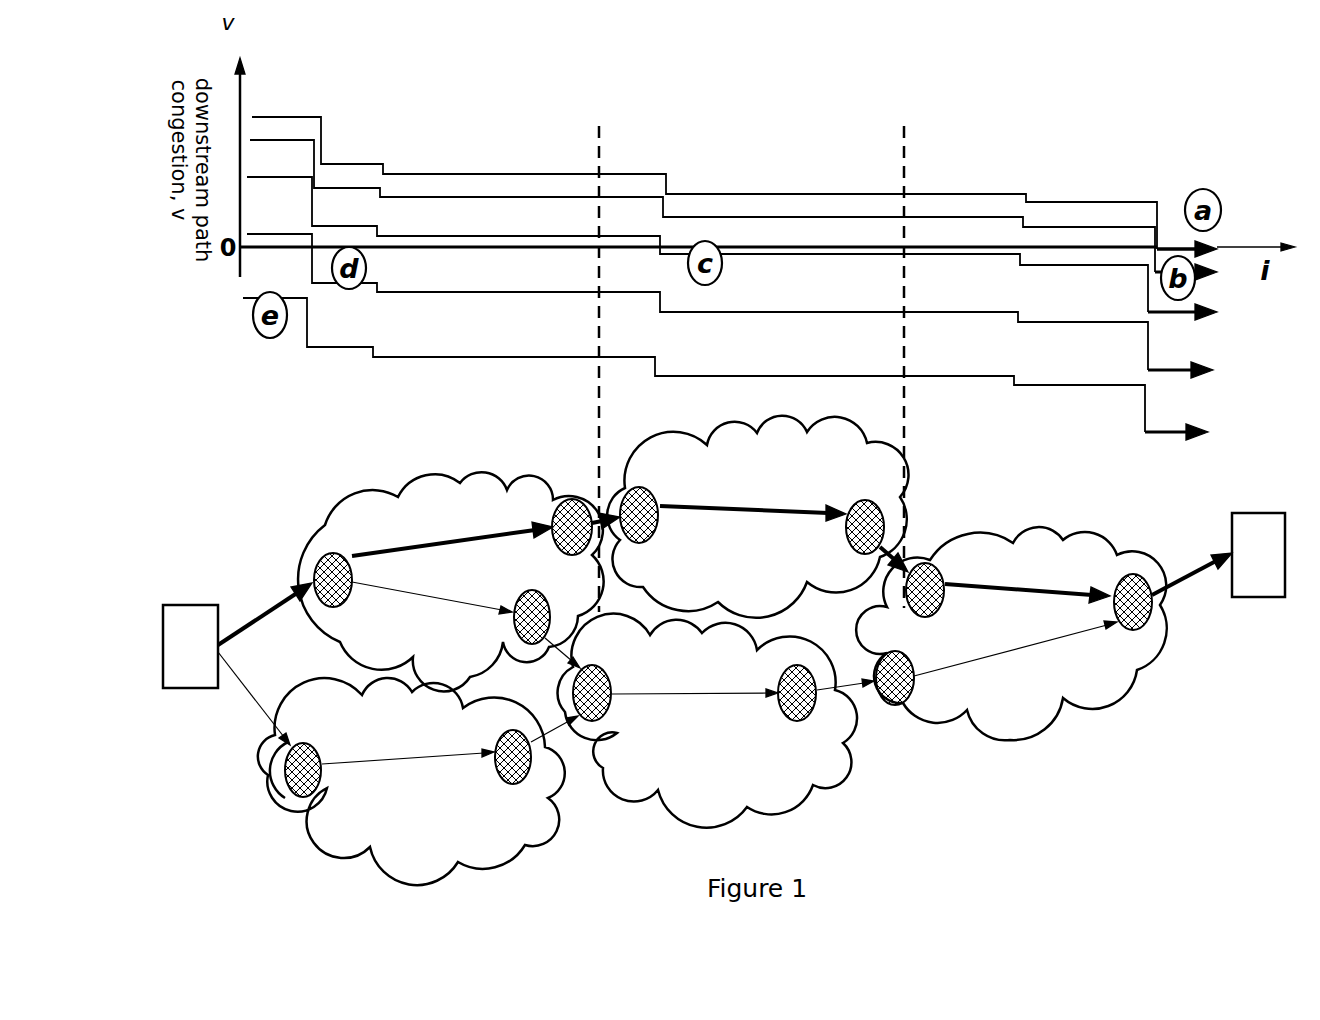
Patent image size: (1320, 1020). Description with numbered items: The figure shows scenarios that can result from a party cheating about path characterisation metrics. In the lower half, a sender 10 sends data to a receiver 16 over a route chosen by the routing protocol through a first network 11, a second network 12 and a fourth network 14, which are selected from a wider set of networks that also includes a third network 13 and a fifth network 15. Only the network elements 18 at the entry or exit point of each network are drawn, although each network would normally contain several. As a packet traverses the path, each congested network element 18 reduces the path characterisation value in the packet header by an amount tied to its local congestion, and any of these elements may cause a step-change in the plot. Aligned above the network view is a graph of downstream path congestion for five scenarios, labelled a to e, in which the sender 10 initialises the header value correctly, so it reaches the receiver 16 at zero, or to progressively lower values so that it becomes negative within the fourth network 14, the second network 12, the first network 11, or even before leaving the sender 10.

The sender 10 is at (190, 688).
The network N1 11 is at (315, 566).
The network N2 12 is at (665, 440).
The network N3 13 is at (855, 773).
The network N4 14 is at (1005, 742).
The network N5 15 is at (273, 807).
The receiver 16 is at (1258, 597).
The network elements 18 is at (328, 552).